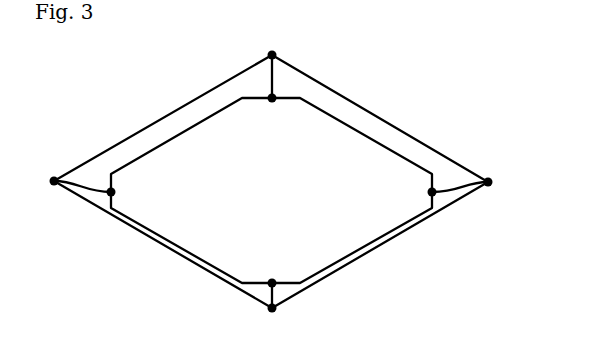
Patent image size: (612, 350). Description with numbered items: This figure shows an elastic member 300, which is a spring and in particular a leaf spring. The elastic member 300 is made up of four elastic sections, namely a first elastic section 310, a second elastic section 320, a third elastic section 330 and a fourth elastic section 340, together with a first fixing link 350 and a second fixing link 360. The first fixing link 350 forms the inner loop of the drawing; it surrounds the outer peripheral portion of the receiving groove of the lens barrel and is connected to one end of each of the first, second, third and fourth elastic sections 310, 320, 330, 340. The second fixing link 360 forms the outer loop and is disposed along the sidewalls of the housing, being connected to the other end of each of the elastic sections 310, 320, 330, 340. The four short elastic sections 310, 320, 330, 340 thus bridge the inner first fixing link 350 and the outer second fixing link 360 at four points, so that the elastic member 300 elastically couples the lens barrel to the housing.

The elastic member 300 is at (456, 48).
The first elastic section 310 is at (449, 186).
The second elastic section 320 is at (253, 297).
The third elastic section 330 is at (86, 188).
The fourth elastic section 340 is at (273, 77).
The first fixing link 350 is at (356, 130).
The second fixing link 360 is at (152, 125).